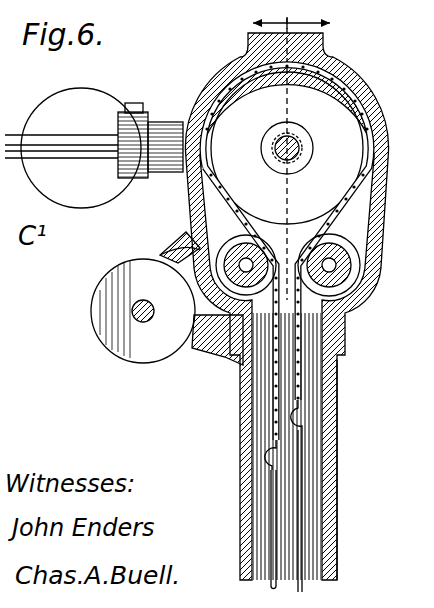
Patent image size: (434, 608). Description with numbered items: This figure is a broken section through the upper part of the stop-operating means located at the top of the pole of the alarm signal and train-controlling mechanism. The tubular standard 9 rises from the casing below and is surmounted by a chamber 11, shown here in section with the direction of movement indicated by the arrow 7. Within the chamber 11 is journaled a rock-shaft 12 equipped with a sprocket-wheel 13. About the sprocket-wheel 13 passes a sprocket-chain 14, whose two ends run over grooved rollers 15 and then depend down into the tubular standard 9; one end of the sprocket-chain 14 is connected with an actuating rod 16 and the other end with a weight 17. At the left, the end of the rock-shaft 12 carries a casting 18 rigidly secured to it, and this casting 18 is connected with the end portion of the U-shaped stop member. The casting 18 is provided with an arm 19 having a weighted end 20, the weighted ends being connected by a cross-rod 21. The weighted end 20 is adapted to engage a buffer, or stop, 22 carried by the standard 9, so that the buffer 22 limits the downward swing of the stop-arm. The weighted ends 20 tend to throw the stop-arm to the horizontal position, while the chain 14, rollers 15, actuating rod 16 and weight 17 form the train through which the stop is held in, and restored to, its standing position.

The direction of movement arrow 7 is at (291, 14).
The standard 9 is at (336, 408).
The chamber 11 is at (383, 233).
The rock-shaft 12 is at (291, 160).
The sprocket-wheel 13 is at (287, 148).
The sprocket-chain 14 is at (358, 190).
The grooved rollers 15 is at (352, 280).
The actuating rod 16 is at (306, 466).
The weight 17 is at (274, 486).
The castings 18 is at (160, 120).
The arms 19 is at (160, 252).
The weighted ends 20 is at (101, 338).
The cross-rod 21 is at (141, 323).
The buffer 22 is at (211, 352).